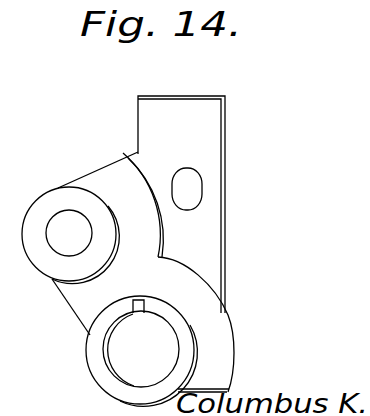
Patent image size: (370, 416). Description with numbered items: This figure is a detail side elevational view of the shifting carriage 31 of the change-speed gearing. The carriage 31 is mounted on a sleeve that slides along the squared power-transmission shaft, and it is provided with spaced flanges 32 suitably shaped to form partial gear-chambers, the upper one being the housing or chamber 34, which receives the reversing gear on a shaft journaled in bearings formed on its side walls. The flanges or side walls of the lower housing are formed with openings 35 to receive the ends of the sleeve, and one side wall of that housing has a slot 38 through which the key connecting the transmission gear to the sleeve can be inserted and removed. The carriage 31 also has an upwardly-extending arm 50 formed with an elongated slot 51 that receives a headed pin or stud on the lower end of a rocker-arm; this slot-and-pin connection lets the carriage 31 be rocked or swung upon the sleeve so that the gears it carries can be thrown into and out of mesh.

The shifting carriage 31 is at (210, 284).
The spaced flanges 32 is at (60, 187).
The gear-chamber 34 is at (98, 164).
The openings 35 is at (110, 356).
The slot 38 is at (139, 300).
The upwardly-extending arm 50 is at (181, 204).
The elongated slot 51 is at (191, 190).